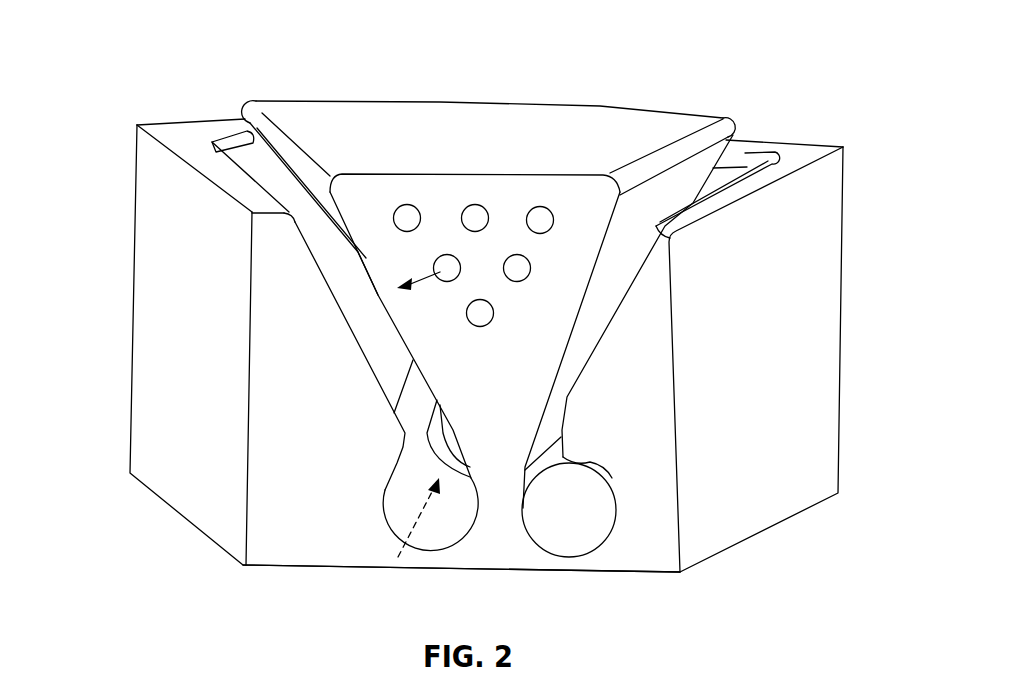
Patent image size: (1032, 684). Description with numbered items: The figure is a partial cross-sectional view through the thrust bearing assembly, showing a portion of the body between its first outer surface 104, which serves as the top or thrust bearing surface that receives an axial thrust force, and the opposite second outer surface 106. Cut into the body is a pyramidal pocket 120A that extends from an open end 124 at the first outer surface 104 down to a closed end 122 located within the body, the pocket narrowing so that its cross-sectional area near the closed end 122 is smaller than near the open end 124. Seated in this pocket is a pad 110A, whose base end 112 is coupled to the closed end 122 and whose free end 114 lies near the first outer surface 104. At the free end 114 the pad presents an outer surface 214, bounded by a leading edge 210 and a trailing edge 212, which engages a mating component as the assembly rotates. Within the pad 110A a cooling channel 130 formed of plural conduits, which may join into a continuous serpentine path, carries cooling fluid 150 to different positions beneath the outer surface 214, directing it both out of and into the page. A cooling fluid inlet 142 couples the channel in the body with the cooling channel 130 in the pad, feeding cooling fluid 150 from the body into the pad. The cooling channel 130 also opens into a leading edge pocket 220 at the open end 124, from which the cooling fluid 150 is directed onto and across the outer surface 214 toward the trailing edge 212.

The first outer surface 104 is at (829, 146).
The second outer surface 106 is at (683, 573).
The pad 110A is at (355, 161).
The base end 112 is at (478, 550).
The free end 114 is at (500, 82).
The pocket 120A is at (362, 278).
The closed end 122 is at (552, 532).
The open end 124 is at (750, 150).
The cooling channel 130 is at (407, 218).
The cooling fluid inlet 142 is at (450, 515).
The cooling fluid 150 is at (400, 522).
The leading edge 210 is at (257, 103).
The trailing edge 212 is at (723, 126).
The outer surface 214 is at (578, 118).
The leading edge pocket 220 is at (243, 128).